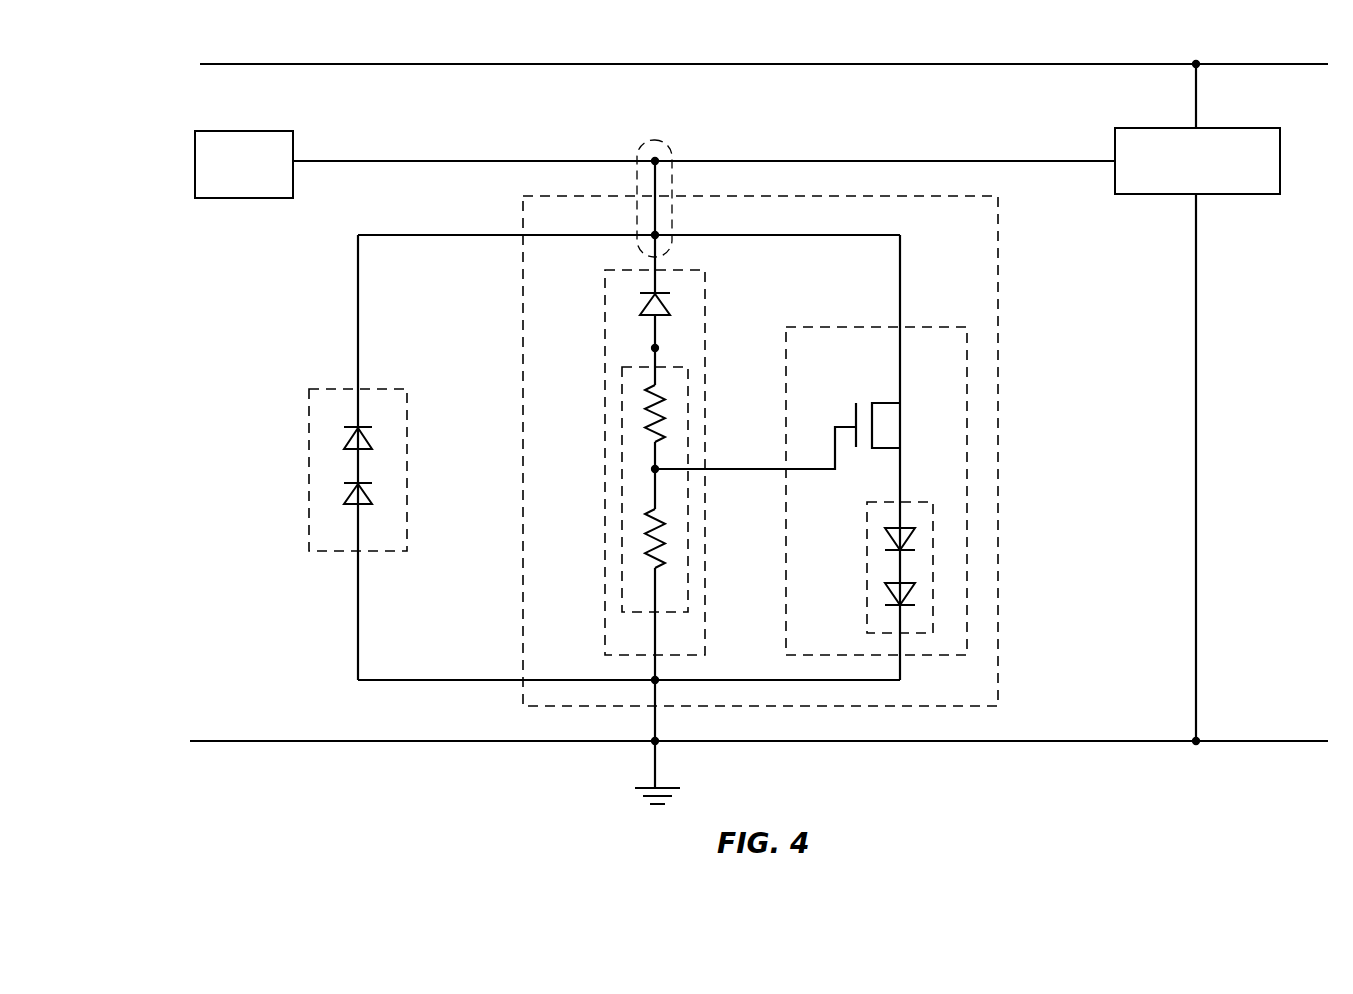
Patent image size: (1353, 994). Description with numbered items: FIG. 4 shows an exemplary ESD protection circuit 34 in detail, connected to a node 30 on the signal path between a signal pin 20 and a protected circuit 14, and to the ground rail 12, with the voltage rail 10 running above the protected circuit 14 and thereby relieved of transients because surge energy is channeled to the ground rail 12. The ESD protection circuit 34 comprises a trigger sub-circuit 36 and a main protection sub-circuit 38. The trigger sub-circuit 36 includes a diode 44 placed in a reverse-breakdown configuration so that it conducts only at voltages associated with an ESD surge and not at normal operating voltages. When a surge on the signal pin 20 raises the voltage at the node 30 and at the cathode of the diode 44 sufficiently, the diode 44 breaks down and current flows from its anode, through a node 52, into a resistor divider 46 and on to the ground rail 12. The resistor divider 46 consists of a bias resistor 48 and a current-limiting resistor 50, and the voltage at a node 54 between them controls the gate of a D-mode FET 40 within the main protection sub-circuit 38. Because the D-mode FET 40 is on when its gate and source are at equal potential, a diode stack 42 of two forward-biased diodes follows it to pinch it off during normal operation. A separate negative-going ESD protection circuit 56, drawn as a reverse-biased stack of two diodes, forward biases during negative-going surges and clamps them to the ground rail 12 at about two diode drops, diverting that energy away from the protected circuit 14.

The voltage rail (Vcc) 10 is at (320, 64).
The ground rail (GND) 12 is at (312, 741).
The protected circuit 14 is at (1243, 128).
The signal pin 20 is at (268, 131).
The node 30 is at (676, 152).
The ESD protection circuit 34 is at (523, 315).
The trigger sub-circuit 36 is at (605, 280).
The main protection sub-circuit 38 is at (918, 327).
The D-mode FET 40 is at (886, 424).
The diode stack 42 is at (933, 530).
The diode 44 is at (665, 312).
The resistor divider 46 is at (688, 385).
The bias resistor 48 is at (662, 428).
The current-limiting resistor 50 is at (662, 553).
The node 52 is at (646, 345).
The node 54 is at (646, 466).
The negative-going ESD protection circuit 56 is at (407, 395).